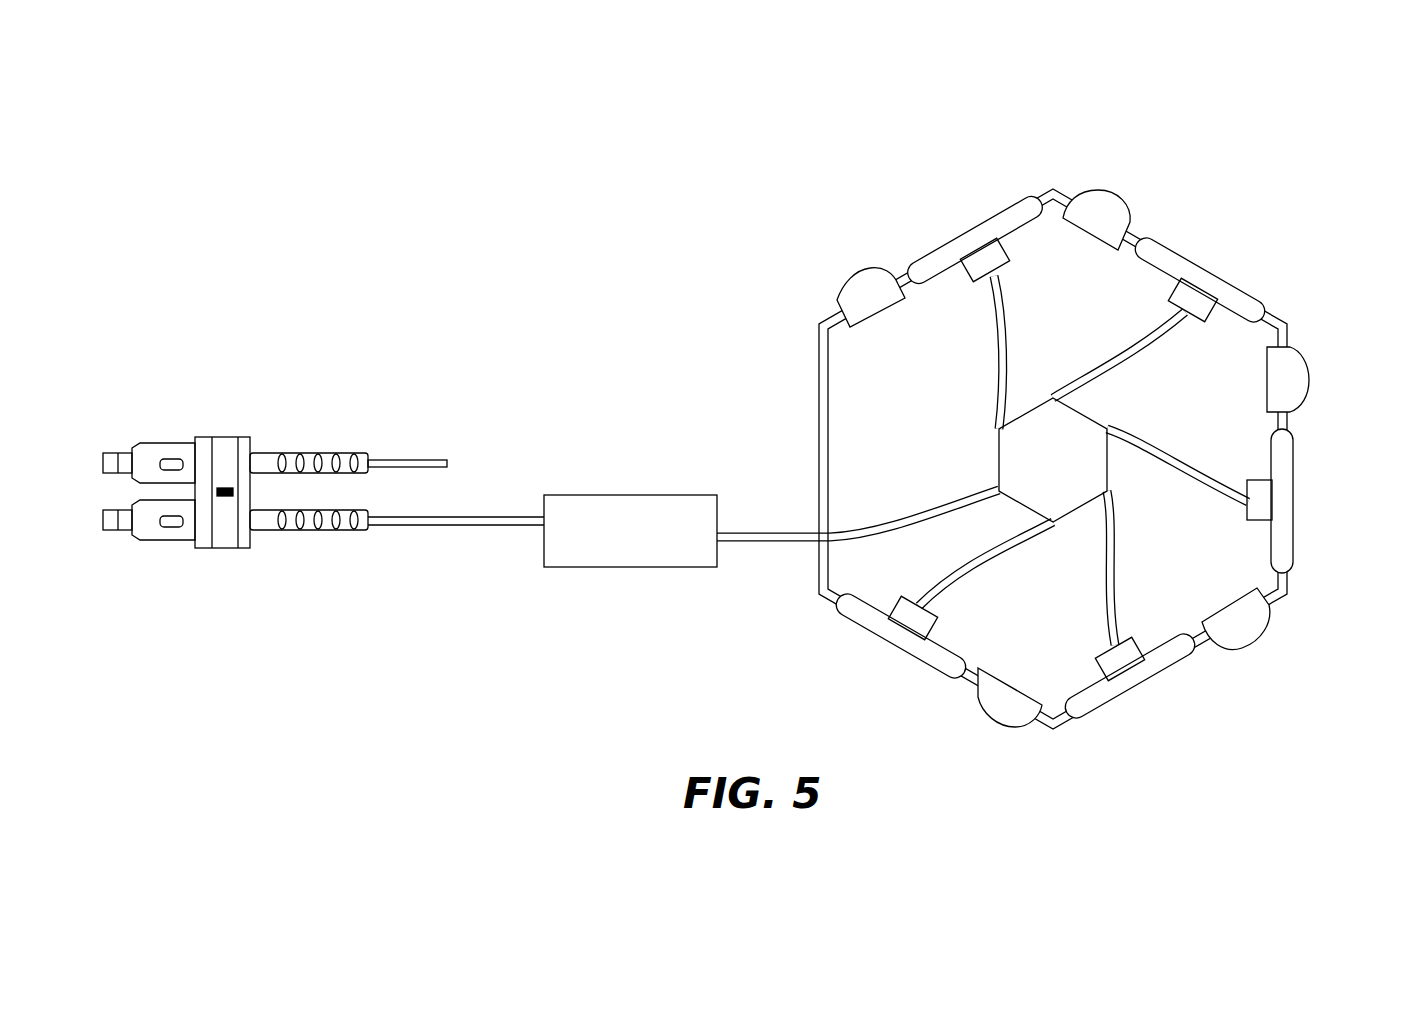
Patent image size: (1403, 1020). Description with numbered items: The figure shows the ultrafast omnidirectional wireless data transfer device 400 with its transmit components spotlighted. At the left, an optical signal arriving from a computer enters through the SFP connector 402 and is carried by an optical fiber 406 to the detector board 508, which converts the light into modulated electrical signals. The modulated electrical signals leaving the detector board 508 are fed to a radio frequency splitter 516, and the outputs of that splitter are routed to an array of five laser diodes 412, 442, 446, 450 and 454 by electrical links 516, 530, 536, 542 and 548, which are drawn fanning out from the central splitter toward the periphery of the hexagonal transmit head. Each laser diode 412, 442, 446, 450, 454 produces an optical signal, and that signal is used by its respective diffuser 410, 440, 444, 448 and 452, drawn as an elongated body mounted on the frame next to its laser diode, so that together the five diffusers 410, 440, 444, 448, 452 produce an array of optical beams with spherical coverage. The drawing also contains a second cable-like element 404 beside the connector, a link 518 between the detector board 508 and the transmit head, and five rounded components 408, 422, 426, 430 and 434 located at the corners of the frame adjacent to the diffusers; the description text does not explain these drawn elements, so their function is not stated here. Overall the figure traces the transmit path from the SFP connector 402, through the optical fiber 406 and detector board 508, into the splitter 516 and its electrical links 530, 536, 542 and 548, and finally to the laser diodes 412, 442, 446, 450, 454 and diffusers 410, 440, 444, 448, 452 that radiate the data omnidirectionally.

The ultrafast omnidirectional wireless data transfer device 400 is at (816, 138).
The SFP connector 402 is at (238, 432).
The first optical fiber cable 404 is at (405, 455).
The optical fiber 406 is at (452, 532).
The sensor head 408 is at (1115, 195).
The diffuser 410 is at (1238, 290).
The laser diode 412 is at (1213, 306).
The sensor head 422 is at (1310, 360).
The sensor head 426 is at (1250, 648).
The sensor head 430 is at (990, 735).
The sensor head 434 is at (858, 278).
The diffuser 440 is at (1290, 530).
The laser diode 442 is at (1258, 480).
The diffuser 444 is at (1125, 695).
The laser diode 446 is at (1140, 640).
The diffuser 448 is at (880, 640).
The laser diode 450 is at (895, 607).
The diffuser 452 is at (975, 232).
The laser diode 454 is at (960, 275).
The detector board 508 is at (575, 567).
The radio frequency splitter 516 is at (1125, 352).
The optical fiber cable 518 is at (770, 548).
The electrical link 530 is at (1125, 428).
The electrical link 536 is at (1100, 600).
The electrical link 542 is at (982, 558).
The electrical link 548 is at (988, 380).